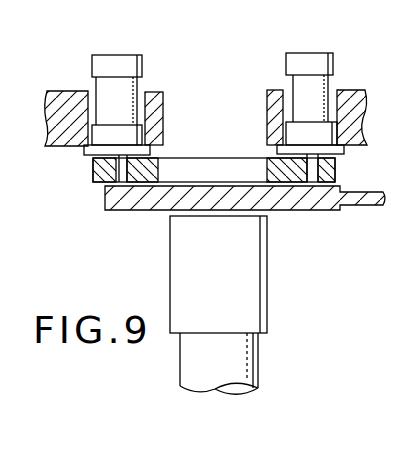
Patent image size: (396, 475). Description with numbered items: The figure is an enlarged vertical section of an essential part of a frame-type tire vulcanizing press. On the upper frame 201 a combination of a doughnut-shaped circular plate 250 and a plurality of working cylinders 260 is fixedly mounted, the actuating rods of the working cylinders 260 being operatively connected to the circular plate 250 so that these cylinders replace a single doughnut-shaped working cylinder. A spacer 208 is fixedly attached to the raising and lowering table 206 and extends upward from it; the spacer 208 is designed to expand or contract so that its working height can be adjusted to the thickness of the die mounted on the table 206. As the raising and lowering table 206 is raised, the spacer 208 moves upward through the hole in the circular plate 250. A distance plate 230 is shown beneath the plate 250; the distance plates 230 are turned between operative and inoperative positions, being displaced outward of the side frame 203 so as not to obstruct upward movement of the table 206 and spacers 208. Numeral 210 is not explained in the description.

The side frame 203 is at (0, 5).
The spacer blocks 210 is at (214, 72).
The raising and lowering table 206 is at (44, 105).
The upper frame 201 is at (352, 90).
The working cylinders 260 is at (117, 54).
The doughnut-shaped circular plate 250 is at (337, 166).
The distance plate 230 is at (362, 206).
The spacer 208 is at (268, 293).